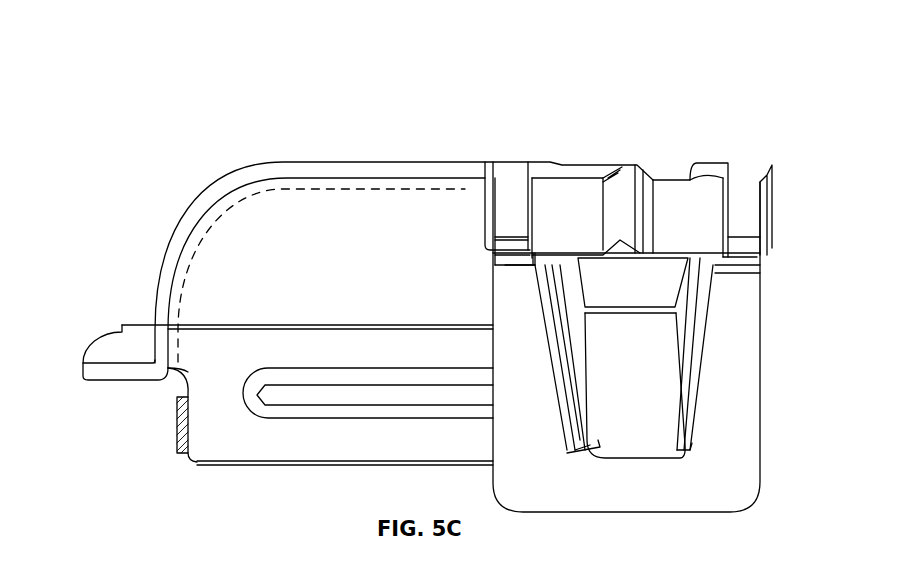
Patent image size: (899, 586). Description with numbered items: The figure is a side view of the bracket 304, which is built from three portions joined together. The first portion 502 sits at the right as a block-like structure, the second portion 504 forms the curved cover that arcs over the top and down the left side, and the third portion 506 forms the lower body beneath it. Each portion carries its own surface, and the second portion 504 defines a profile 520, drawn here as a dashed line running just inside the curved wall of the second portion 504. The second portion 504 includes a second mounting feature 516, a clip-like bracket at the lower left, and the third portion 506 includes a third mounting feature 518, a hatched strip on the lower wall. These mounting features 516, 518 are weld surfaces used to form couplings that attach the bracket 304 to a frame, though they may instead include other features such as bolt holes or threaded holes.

The bracket 304 is at (747, 63).
The first portion 502 is at (715, 163).
The second portion 504 is at (358, 162).
The third portion 506 is at (370, 464).
The second mounting feature 516 is at (120, 381).
The third mounting feature 518 is at (132, 427).
The profile 520 is at (228, 213).